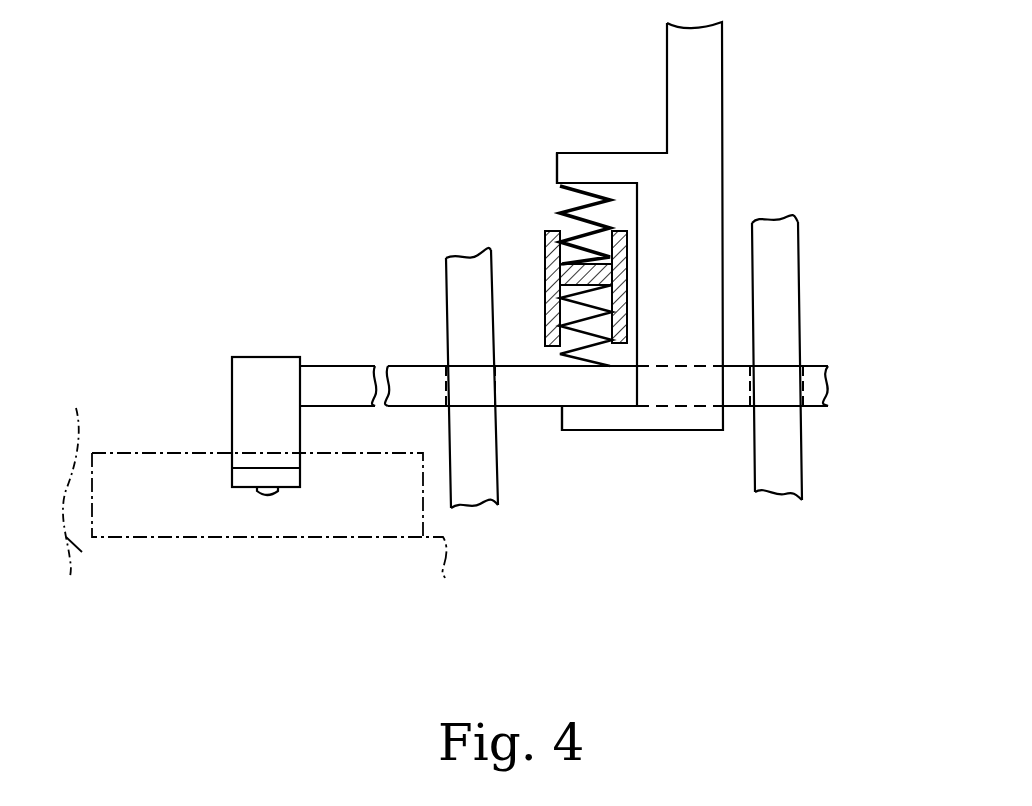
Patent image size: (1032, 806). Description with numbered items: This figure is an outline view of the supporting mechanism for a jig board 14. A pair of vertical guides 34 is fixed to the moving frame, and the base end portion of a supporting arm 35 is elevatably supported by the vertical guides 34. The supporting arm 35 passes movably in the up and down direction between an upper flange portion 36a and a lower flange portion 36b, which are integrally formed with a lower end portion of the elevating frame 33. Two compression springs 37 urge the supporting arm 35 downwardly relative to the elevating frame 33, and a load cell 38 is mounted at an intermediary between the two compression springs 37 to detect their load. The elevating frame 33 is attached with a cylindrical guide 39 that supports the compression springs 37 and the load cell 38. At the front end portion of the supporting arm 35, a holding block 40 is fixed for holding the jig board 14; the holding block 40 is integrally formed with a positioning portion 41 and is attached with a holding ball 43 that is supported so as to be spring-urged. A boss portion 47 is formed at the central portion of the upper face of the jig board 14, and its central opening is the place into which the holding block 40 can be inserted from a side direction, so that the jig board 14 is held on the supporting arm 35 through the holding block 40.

The jig board 14 is at (65, 470).
The elevating frame 33 is at (710, 62).
The vertical guides 34 is at (465, 280).
The supporting arm 35 is at (815, 392).
The upper flange portion 36a is at (592, 167).
The lower flange portion 36b is at (578, 418).
The compression springs 37 is at (573, 215).
The load cell 38 is at (627, 252).
The guide 39 is at (545, 257).
The holding block 40 is at (258, 378).
The positioning portion 41 is at (287, 477).
The holding ball 43 is at (260, 500).
The boss portion 47 is at (155, 467).